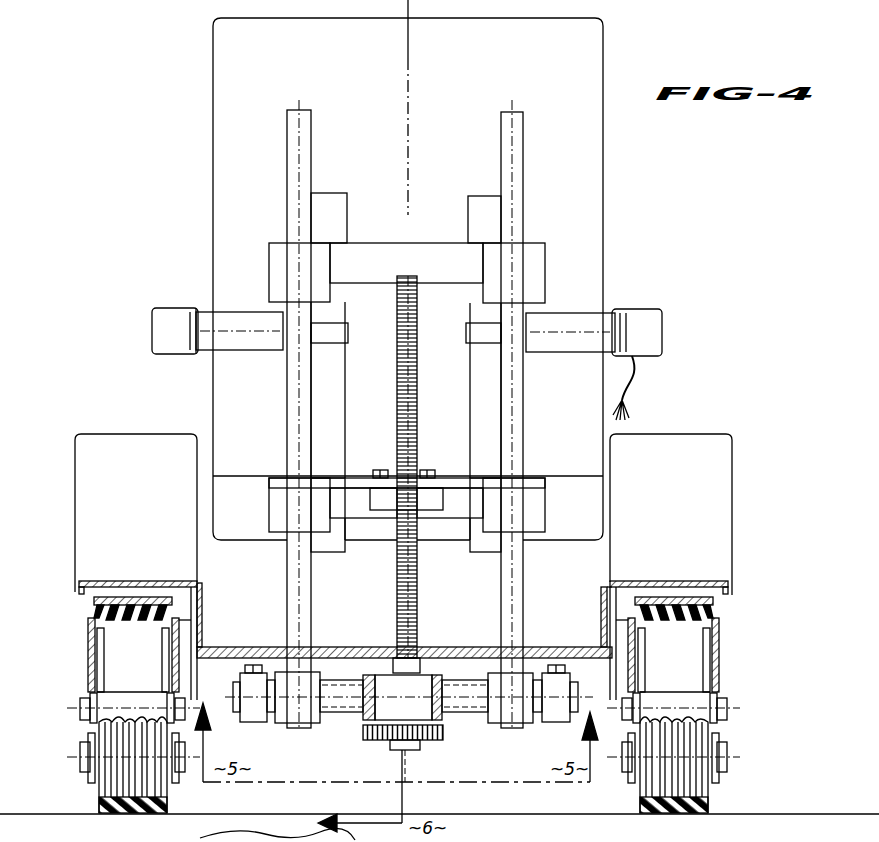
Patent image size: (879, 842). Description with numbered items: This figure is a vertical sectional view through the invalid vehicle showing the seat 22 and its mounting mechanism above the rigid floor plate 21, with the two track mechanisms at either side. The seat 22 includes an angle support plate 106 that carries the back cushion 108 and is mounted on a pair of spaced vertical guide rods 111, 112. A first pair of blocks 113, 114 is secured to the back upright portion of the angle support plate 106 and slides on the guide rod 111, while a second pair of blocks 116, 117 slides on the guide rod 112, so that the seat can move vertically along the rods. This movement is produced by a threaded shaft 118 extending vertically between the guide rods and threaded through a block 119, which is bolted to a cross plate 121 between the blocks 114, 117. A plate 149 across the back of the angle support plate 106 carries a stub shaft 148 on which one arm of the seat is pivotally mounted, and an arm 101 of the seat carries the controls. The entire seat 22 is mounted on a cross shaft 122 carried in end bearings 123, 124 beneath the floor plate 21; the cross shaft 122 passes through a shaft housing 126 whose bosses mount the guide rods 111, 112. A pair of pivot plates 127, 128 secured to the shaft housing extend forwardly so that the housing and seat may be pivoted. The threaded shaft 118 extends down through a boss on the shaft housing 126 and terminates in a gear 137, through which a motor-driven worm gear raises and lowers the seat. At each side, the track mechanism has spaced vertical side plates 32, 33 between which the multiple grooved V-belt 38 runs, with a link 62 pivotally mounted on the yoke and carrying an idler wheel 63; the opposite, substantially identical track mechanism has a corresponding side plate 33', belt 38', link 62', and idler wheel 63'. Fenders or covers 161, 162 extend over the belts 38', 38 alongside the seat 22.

The seat 22 is at (202, 58).
The back cushion 108 is at (603, 228).
The vertical guide rod 111 is at (286, 128).
The vertical guide rod 112 is at (520, 118).
The block 113 is at (269, 245).
The block 116 is at (535, 276).
The stub shaft 148 is at (340, 328).
The arm 101 is at (664, 320).
The threaded shaft 118 is at (397, 402).
The block 114 is at (269, 482).
The block 117 is at (535, 488).
The cross plate 121 is at (450, 478).
The plate 149 is at (360, 488).
The block 119 is at (428, 520).
The angle support plate 106 is at (335, 548).
The floor plate 21 is at (358, 630).
The side plate 32 is at (608, 648).
The fender 161 is at (140, 434).
The fender 162 is at (730, 436).
The side plate 33 is at (686, 640).
The left wheel housing 33' is at (116, 640).
The multiple grooved V-belt 38 is at (698, 583).
The belt 38' is at (133, 582).
The link 62 is at (684, 738).
The left axle bolts 62' is at (118, 738).
The idler wheel 63 is at (701, 765).
The left wheel 63' is at (101, 765).
The cross shaft 122 is at (230, 672).
The end bearing 123 is at (258, 722).
The pivot plate 127 is at (368, 722).
The pivot plate 128 is at (420, 665).
The gear 137 is at (412, 742).
The shaft housing 126 is at (490, 722).
The end bearing 124 is at (556, 722).